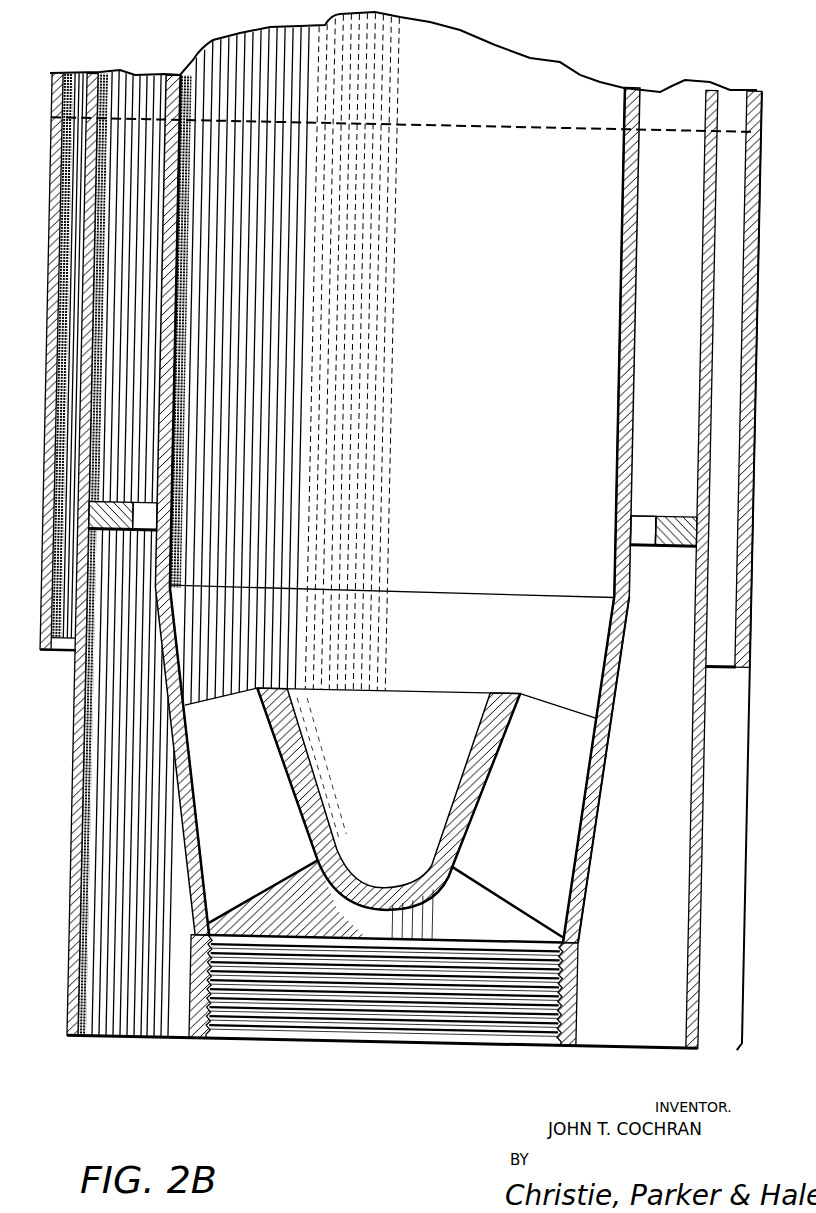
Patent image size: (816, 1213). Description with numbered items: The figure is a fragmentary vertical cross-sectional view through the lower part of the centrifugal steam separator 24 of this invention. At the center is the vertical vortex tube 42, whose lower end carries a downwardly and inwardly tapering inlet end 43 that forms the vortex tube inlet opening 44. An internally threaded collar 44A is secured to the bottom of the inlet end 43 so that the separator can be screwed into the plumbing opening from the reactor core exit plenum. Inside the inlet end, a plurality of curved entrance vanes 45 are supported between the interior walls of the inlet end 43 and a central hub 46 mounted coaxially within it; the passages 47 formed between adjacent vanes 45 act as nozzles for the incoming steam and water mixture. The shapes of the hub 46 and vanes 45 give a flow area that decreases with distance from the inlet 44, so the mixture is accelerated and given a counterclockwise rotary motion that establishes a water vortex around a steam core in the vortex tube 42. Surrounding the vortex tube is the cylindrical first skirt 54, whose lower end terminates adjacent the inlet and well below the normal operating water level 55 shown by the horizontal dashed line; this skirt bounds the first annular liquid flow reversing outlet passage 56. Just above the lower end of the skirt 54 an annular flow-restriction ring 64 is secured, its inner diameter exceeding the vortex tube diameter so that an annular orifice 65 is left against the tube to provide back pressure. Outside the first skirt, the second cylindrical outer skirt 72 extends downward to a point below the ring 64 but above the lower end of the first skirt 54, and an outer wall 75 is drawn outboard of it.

The steam separator 24 is at (752, 162).
The vortex tube 42 is at (616, 167).
The inlet end 43 is at (598, 844).
The vortex tube inlet opening 44 is at (414, 934).
The internally threaded collar 44A is at (208, 1044).
The entrance vanes 45 is at (307, 878).
The central hub 46 is at (488, 721).
The passages 47 is at (245, 786).
The first skirt 54 is at (699, 239).
The normal operating water level 55 is at (100, 76).
The first annular liquid flow reversing outlet passage 56 is at (118, 222).
The flow-restriction ring 64 is at (679, 511).
The annular orifice 65 is at (639, 530).
The second cylindrical outer skirt 72 is at (720, 661).
The outer wall 75 is at (44, 297).